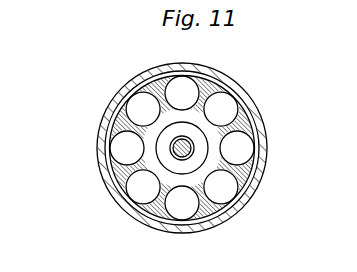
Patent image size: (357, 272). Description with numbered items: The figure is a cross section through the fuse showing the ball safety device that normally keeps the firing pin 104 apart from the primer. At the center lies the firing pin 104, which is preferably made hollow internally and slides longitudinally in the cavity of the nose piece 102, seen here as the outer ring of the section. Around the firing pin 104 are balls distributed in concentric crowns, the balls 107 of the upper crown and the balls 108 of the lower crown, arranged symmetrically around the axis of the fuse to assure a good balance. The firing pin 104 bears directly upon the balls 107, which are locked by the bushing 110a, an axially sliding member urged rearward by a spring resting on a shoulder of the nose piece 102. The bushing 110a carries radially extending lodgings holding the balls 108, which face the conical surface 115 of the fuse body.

The nose piece 102 is at (215, 220).
The firing pin 104 is at (184, 147).
The balls of the upper crown 107 is at (182, 88).
The balls of the lower crown 108 is at (138, 105).
The bushing 110a is at (130, 135).
The conical surface 115 is at (148, 218).